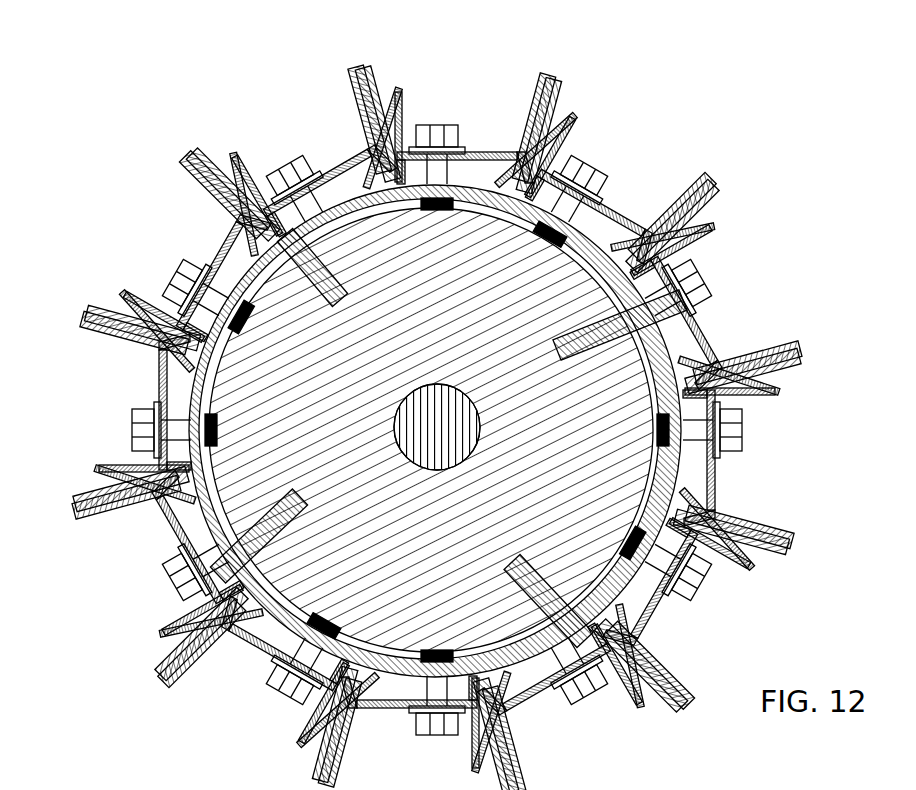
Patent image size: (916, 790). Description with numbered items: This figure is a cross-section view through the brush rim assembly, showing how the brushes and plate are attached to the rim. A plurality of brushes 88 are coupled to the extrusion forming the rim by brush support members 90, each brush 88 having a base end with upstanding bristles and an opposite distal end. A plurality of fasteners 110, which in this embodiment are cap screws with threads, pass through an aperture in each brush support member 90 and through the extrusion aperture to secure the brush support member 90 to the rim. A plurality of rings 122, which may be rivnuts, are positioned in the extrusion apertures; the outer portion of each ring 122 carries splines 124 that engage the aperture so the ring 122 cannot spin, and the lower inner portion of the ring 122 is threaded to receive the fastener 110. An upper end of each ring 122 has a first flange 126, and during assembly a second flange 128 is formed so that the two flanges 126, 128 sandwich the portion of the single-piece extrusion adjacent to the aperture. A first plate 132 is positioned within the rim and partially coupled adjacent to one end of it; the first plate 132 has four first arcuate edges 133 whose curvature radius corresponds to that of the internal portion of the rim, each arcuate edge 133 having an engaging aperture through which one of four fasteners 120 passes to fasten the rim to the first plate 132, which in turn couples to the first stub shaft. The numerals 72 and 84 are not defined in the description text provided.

The central hole 72 is at (426, 433).
The blade 84 is at (250, 648).
The brush 88 is at (546, 76).
The brush support member 90 is at (598, 121).
The fastener 110 is at (598, 178).
The fastener 120 is at (668, 320).
The ring 122 is at (215, 270).
The splines 124 is at (196, 363).
The first flange 126 is at (267, 242).
The second flange 128 is at (450, 193).
The first plate 132 is at (408, 531).
The first arcuate edge 133 is at (700, 345).